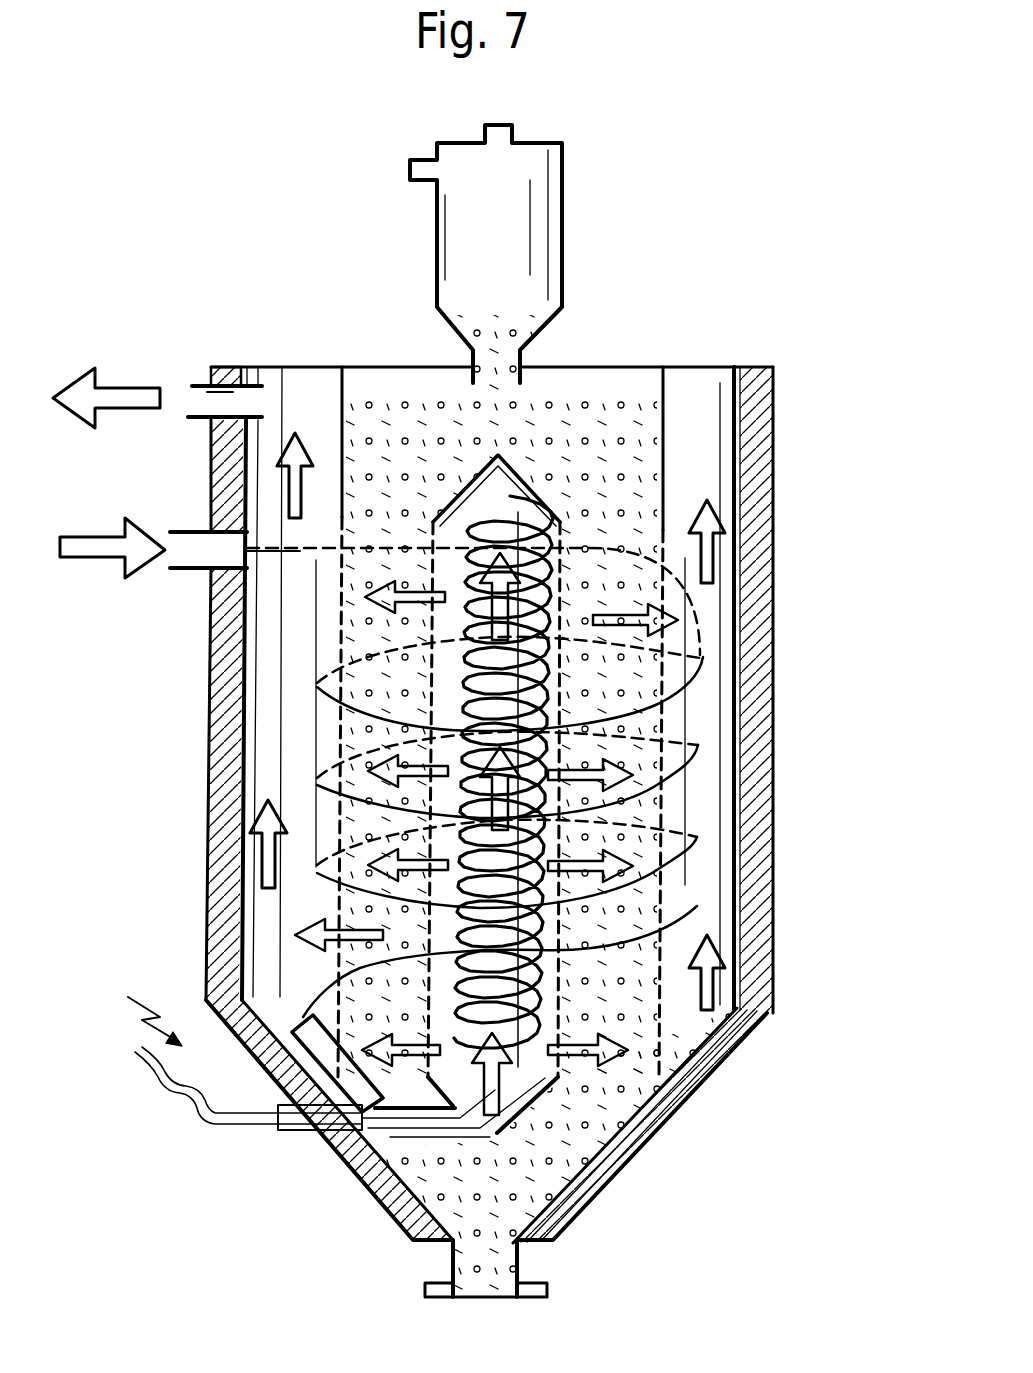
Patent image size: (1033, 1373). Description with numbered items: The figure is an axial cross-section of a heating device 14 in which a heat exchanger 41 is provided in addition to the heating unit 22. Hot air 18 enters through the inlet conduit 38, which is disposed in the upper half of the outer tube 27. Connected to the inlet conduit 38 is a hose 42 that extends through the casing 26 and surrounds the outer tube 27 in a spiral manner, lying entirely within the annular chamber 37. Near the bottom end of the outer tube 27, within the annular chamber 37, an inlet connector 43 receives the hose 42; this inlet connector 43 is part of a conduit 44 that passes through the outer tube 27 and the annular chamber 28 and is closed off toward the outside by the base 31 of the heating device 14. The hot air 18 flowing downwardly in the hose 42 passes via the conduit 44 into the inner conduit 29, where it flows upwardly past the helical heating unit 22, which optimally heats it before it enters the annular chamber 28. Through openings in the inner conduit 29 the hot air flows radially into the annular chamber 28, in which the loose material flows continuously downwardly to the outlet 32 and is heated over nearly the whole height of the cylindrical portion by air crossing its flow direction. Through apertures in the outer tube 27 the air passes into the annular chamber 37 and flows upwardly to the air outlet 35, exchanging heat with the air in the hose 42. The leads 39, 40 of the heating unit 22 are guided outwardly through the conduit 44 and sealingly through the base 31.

The heating device 14 is at (786, 204).
The hot air 18 is at (105, 547).
The heating unit 22 is at (517, 512).
The casing 26 is at (775, 760).
The outer tube 27 is at (660, 649).
The annular chamber 28 is at (620, 525).
The inner conduit 29 is at (560, 924).
The base 31 is at (620, 1133).
The outlet 32 is at (547, 1288).
The air outlet 35 is at (205, 403).
The annular chamber 37 is at (716, 437).
The inlet conduit 38 is at (205, 563).
The lead 39 is at (140, 1062).
The lead 40 is at (197, 1087).
The heat exchanger 41 is at (296, 752).
The hose 42 is at (285, 551).
The inlet connector 43 is at (300, 1015).
The conduit 44 is at (300, 1123).